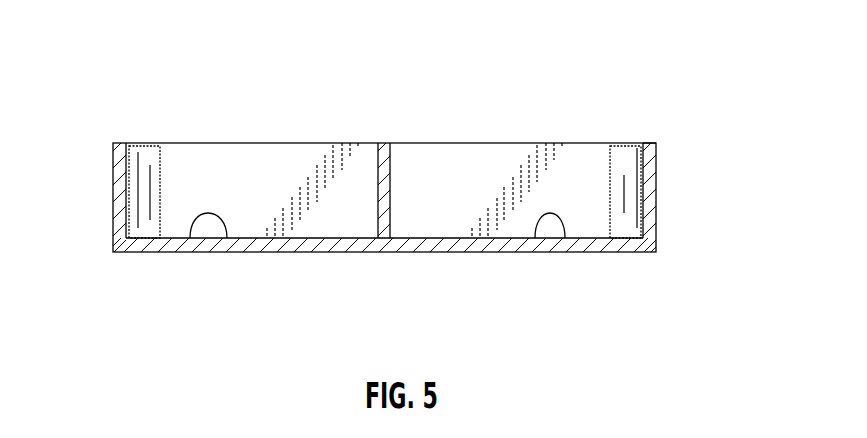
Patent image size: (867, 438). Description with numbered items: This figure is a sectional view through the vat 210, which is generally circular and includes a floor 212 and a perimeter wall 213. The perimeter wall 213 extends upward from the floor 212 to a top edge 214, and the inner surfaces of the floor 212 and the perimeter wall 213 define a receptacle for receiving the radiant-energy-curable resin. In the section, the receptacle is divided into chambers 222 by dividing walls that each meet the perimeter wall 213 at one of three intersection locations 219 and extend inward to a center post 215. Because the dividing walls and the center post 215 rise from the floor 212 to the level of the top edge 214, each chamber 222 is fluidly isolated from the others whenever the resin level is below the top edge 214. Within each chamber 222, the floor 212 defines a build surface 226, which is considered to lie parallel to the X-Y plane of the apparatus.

The vat 210 is at (630, 278).
The floor 212 is at (330, 238).
The perimeter wall 213 is at (648, 197).
The top edge 214 is at (652, 143).
The center post 215 is at (383, 143).
The intersection location 219 is at (153, 188).
The chamber 222 is at (265, 172).
The build surface 226 is at (193, 238).